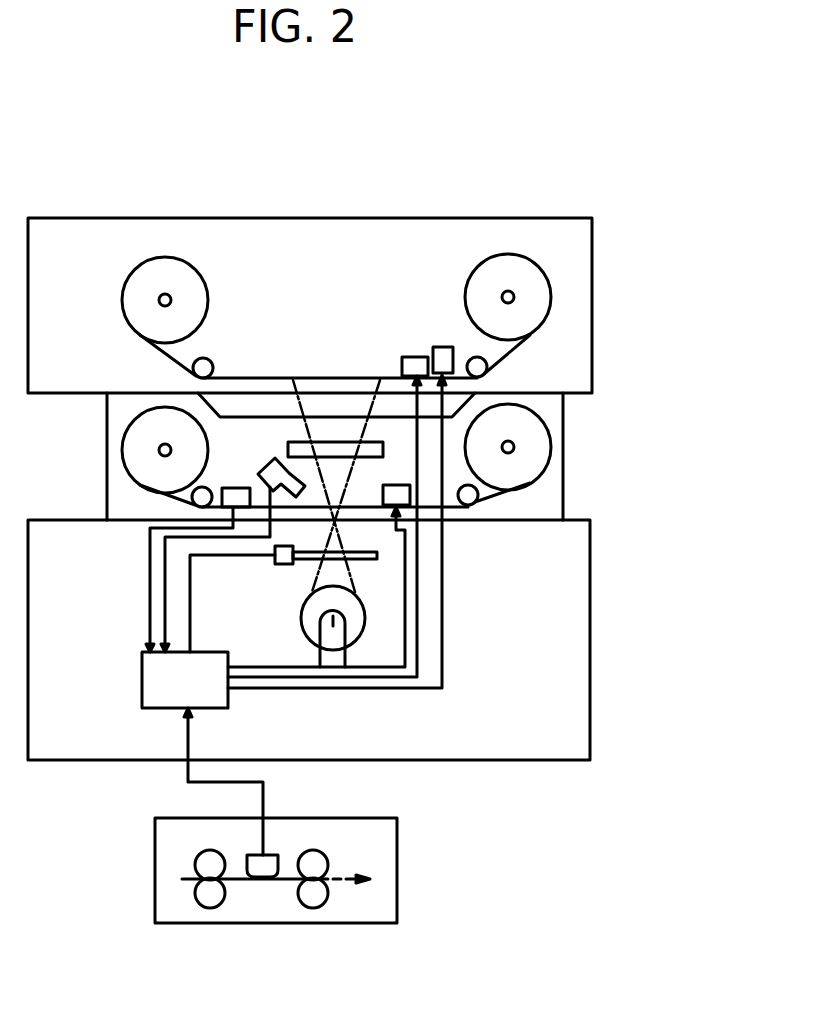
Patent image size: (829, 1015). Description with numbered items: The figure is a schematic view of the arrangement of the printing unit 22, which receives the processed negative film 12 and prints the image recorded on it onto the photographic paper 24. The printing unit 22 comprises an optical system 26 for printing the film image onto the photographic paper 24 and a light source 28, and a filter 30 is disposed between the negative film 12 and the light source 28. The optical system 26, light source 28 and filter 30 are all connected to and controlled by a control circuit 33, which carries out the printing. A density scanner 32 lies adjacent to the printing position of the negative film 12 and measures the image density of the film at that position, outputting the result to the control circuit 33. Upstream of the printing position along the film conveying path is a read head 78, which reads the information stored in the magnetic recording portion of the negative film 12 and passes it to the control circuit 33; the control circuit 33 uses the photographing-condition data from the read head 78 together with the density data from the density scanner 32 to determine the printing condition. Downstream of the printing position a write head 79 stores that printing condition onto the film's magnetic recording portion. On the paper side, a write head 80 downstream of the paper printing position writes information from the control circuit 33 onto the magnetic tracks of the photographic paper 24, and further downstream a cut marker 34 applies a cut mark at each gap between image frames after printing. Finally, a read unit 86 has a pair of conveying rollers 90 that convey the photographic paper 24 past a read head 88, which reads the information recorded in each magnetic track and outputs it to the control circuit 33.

The negative film 12 is at (122, 432).
The printing unit 22 is at (413, 214).
The photographic paper 24 is at (206, 316).
The optical system 26 is at (287, 450).
The light source 28 is at (300, 623).
The filter 30 is at (376, 560).
The density scanner 32 is at (258, 474).
The control circuit 33 is at (210, 708).
The cut marker 34 is at (443, 347).
The read head 78 is at (224, 507).
The write head 79 is at (411, 494).
The write head 80 is at (415, 357).
The read unit 86 is at (398, 845).
The read head 88 is at (252, 882).
The conveying rollers 90 is at (198, 866).